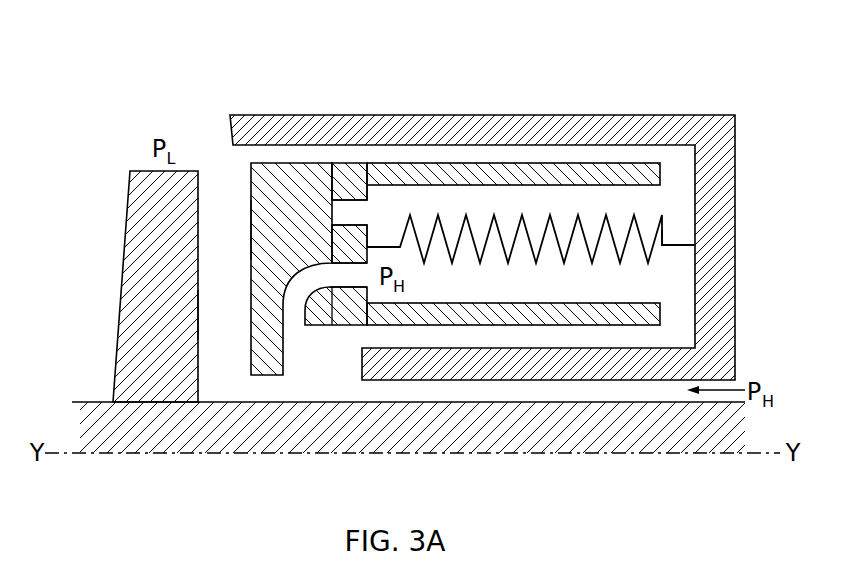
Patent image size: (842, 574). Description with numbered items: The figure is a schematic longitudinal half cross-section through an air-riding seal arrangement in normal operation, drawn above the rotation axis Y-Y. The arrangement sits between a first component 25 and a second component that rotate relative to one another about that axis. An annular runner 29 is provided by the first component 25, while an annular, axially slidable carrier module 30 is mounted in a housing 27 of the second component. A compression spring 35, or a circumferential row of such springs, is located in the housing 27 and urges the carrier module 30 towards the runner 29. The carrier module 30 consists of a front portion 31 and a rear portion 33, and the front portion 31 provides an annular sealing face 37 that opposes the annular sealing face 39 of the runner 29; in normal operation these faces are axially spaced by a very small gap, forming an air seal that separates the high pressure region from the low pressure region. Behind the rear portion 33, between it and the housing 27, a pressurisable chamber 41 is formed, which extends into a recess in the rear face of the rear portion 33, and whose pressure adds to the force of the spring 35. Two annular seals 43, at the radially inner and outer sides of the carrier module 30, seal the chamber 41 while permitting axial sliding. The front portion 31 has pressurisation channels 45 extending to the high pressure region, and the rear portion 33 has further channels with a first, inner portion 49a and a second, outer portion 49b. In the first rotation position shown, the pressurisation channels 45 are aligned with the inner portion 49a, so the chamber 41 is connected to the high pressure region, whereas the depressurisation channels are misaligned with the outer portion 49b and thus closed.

The first component 25 is at (322, 446).
The housing 27 is at (687, 115).
The annular runner 29 is at (113, 253).
The carrier module 30 is at (357, 50).
The front portion 31 is at (279, 150).
The rear portion 33 is at (359, 150).
The compression spring 35 is at (680, 248).
The sealing face of the carrier module 37 is at (250, 227).
The sealing face of the runner 39 is at (198, 333).
The pressurisable chamber 41 is at (590, 200).
The annular seals 43 is at (465, 151).
The pressurisation channels 45 is at (296, 314).
The first (inner) portion of the further channels 49a is at (348, 283).
The second (outer) portion of the further channels 49b is at (357, 215).